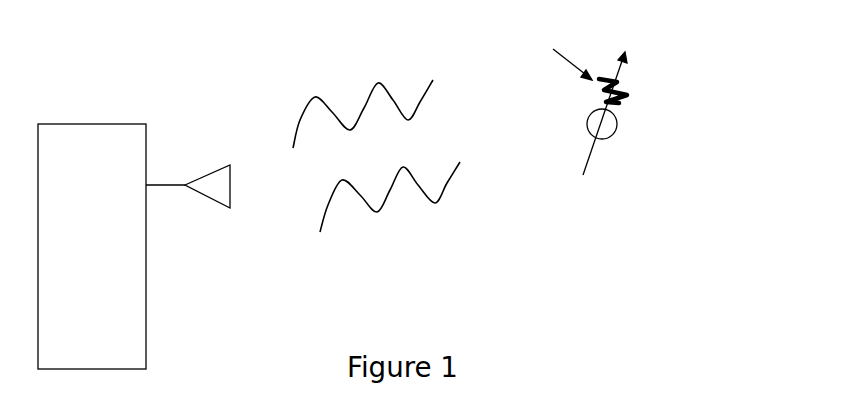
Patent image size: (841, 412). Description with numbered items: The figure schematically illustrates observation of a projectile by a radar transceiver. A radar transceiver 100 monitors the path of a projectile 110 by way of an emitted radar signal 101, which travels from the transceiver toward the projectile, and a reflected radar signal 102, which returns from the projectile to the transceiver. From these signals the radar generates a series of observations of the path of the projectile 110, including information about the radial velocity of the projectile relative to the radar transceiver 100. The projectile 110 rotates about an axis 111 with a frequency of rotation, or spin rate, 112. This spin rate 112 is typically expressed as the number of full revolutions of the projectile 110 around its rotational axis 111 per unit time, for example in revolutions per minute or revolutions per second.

The radar transceiver 100 is at (134, 246).
The emitted radar signal 101 is at (363, 88).
The reflected radar signal 102 is at (390, 220).
The projectile 110 is at (643, 113).
The axis 111 is at (622, 68).
The spin rate 112 is at (545, 43).